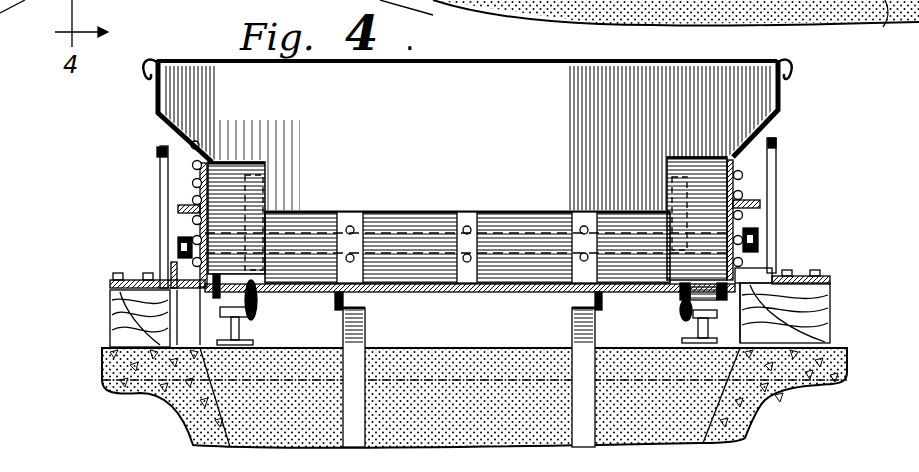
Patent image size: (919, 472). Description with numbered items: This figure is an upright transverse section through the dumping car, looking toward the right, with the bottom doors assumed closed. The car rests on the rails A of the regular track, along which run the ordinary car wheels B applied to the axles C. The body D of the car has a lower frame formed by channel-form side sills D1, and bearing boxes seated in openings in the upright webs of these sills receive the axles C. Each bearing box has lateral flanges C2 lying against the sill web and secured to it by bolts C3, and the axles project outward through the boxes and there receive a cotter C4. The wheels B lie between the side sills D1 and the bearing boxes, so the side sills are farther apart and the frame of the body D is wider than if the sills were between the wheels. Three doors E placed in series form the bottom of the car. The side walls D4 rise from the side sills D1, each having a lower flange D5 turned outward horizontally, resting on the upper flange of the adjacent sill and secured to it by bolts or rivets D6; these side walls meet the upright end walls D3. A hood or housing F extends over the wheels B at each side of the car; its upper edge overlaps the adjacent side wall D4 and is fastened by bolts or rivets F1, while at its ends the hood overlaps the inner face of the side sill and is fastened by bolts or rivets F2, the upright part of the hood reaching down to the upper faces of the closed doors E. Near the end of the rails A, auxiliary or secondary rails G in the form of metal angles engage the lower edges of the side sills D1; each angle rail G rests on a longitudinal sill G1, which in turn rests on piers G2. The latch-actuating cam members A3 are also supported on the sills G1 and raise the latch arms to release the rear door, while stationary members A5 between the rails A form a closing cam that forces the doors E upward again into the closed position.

The rails of the regular track A is at (230, 330).
The cam member A3 is at (165, 208).
The stationary members A5 is at (357, 332).
The car wheels B is at (200, 293).
The axles C is at (180, 240).
The lateral flanges C2 is at (180, 264).
The bolts C3 is at (187, 224).
The cotter C4 is at (178, 246).
The body of the car D is at (482, 135).
The channel-form side sills D1 is at (203, 230).
The upright end walls D3 is at (452, 140).
The side walls D4 is at (157, 97).
The lower flange D5 is at (180, 207).
The bolts or rivets D6 is at (160, 152).
The doors E is at (417, 297).
The hood or housing F is at (240, 160).
The bolts or rivets F1 is at (193, 147).
The bolts or rivets F2 is at (247, 293).
The auxiliary or secondary rails G is at (110, 317).
The longitudinal sills G1 is at (110, 301).
The piers G2 is at (110, 370).